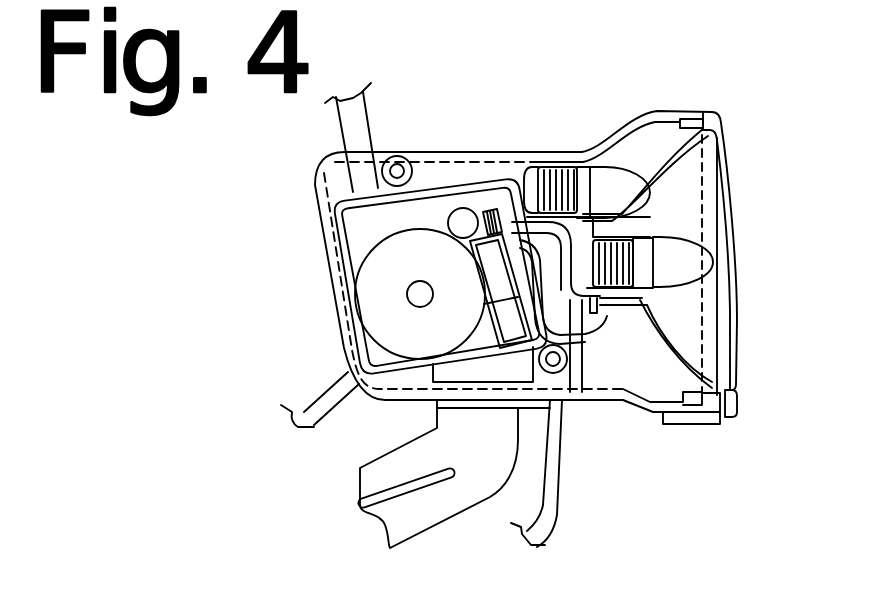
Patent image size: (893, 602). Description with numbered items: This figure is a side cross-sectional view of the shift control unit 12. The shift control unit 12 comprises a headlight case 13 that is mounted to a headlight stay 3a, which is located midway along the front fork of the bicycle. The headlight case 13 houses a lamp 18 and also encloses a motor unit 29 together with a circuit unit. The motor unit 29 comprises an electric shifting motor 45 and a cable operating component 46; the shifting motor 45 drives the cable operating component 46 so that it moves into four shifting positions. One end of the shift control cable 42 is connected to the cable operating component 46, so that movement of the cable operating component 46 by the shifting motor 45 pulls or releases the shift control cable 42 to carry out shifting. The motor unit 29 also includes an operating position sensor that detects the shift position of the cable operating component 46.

The headlight stay 3a is at (417, 523).
The shift control unit 12 is at (586, 112).
The headlight case 13 is at (507, 152).
The lamp 18 is at (672, 252).
The motor unit 29 is at (416, 467).
The shift control cable 42 is at (366, 112).
The shifting motor 45 is at (549, 390).
The cable operating component 46 is at (398, 327).